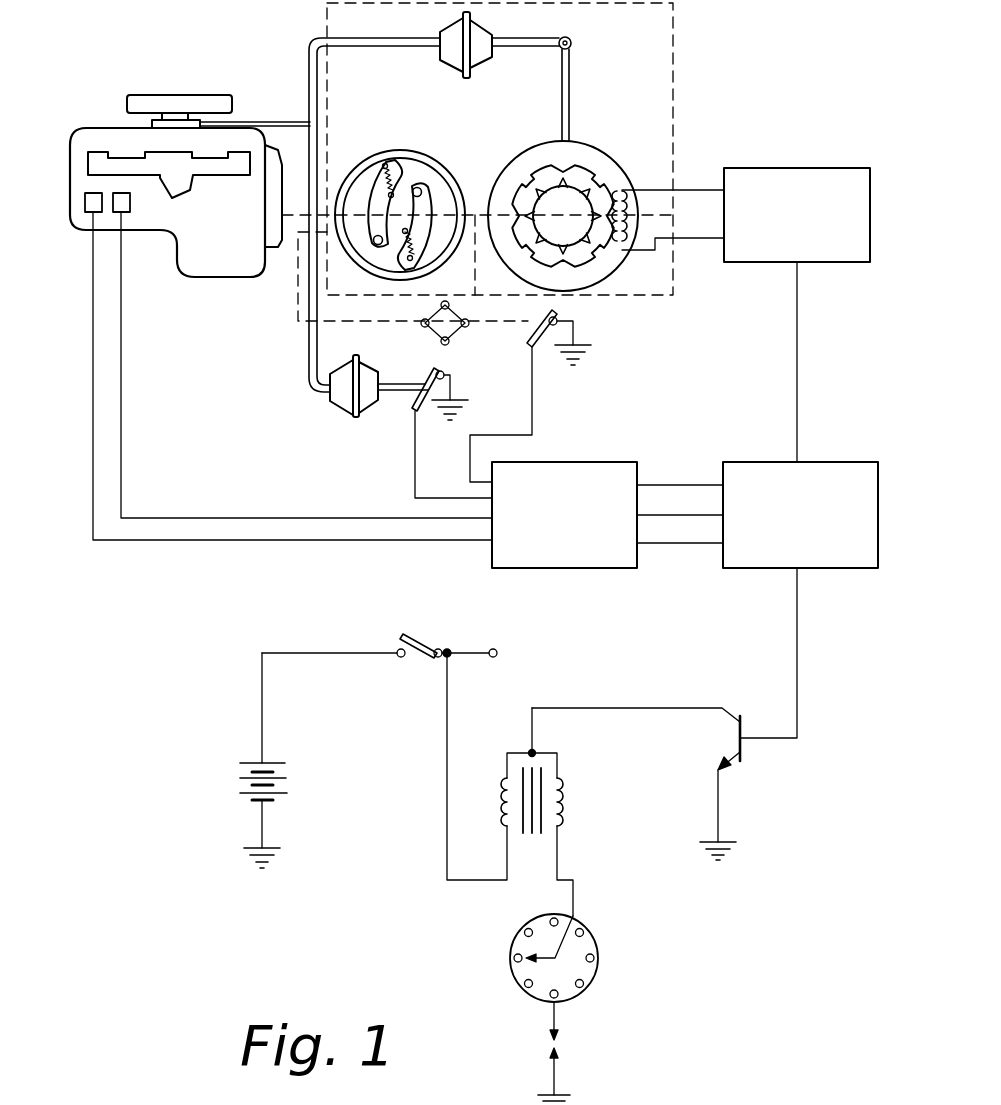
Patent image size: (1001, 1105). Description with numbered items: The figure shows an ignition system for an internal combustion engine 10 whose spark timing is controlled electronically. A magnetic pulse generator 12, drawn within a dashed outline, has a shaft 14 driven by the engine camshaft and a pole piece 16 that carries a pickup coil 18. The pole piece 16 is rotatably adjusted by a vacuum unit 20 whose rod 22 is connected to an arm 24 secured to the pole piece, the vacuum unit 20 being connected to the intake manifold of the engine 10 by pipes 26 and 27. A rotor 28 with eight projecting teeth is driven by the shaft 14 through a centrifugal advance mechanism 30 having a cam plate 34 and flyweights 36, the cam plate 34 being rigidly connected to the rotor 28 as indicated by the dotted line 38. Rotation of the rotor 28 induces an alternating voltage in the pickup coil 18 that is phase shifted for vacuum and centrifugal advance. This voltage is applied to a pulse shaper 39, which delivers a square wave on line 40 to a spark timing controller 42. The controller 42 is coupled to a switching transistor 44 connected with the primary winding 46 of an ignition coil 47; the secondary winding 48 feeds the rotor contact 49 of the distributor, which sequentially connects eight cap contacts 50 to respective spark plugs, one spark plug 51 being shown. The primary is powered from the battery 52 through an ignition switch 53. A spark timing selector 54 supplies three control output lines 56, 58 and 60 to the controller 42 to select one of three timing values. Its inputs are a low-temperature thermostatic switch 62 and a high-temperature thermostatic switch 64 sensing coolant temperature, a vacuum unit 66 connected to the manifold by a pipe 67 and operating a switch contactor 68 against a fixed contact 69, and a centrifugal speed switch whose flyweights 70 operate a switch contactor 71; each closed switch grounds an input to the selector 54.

The internal combustion engine 10 is at (222, 262).
The pulse generator 12 is at (668, 72).
The shaft 14 is at (326, 204).
The pole piece 16 is at (610, 170).
The pickup coil 18 is at (630, 218).
The vacuum unit 20 is at (482, 33).
The rod 22 is at (538, 48).
The arm 24 is at (570, 108).
The pipe 26 is at (377, 44).
The pipe 27 is at (272, 121).
The rotor 28 is at (588, 232).
The centrifugal advance mechanism 30 is at (412, 220).
The cam plate 34 is at (398, 231).
The flyweights 36 is at (426, 195).
The dotted line 38 is at (474, 255).
The pulse shaper 39 is at (846, 185).
The line 40 is at (800, 357).
The spark timing controller 42 is at (862, 487).
The switching transistor 44 is at (745, 745).
The primary winding 46 is at (497, 810).
The ignition coil 47 is at (544, 787).
The secondary winding 48 is at (563, 800).
The rotor contact 49 is at (525, 962).
The contacts 50 is at (563, 958).
The spark plug 51 is at (556, 1048).
The battery 52 is at (245, 790).
The ignition switch 53 is at (418, 645).
The spark timing selector 54 is at (617, 487).
The control output line 56 is at (662, 485).
The control output line 58 is at (665, 515).
The control output line 60 is at (690, 545).
The thermostatic switch 62 is at (94, 199).
The thermostatic switch 64 is at (130, 203).
The vacuum unit 66 is at (340, 396).
The pipe 67 is at (308, 330).
The switch contactor 68 is at (423, 402).
The fixed contact 69 is at (441, 371).
The flyweights 70 is at (459, 312).
The switch contactor 71 is at (543, 340).